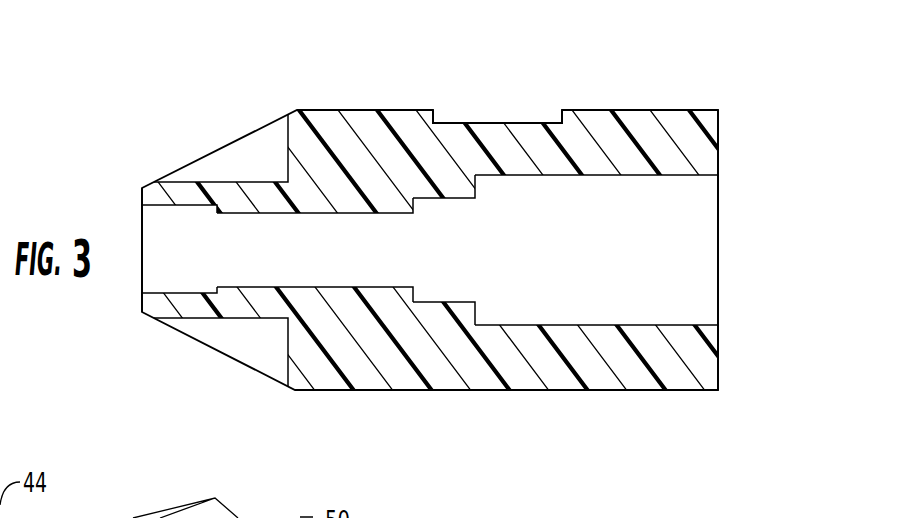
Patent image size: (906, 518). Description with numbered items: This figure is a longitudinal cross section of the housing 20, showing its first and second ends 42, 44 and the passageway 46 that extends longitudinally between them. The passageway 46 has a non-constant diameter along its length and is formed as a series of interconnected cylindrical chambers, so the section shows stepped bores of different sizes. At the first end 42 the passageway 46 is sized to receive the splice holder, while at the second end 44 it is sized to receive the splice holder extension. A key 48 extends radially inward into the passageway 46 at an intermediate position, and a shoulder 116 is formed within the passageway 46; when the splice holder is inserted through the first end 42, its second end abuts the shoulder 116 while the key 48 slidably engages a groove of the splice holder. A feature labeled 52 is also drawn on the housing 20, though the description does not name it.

The housing 20 is at (530, 401).
The first end 42 is at (718, 138).
The second end 44 is at (142, 220).
The passageway 46 is at (532, 262).
The key 48 is at (475, 195).
The annular groove 52 is at (466, 123).
The shoulder 116 is at (417, 270).